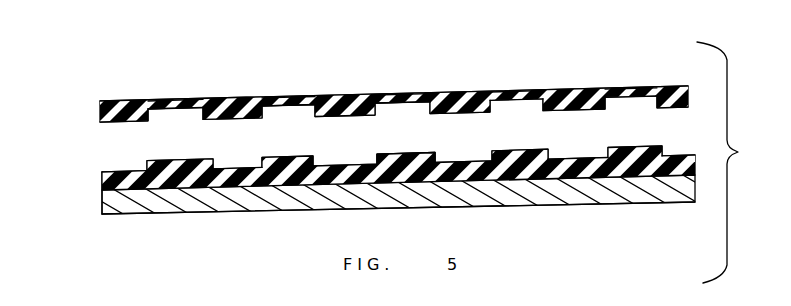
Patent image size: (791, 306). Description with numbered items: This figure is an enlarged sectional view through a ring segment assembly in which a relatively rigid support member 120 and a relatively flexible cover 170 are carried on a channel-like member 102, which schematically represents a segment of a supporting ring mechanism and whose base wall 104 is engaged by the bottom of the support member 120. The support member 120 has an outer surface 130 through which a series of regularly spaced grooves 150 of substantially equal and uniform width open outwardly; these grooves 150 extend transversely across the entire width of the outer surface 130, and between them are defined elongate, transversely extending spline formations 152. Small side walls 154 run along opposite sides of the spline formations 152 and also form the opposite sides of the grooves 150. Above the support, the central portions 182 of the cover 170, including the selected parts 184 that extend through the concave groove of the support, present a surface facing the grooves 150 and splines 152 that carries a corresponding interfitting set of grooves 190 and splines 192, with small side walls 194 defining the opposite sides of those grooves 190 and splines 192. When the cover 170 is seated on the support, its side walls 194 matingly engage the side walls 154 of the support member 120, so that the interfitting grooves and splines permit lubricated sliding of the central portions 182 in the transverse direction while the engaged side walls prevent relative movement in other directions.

The channel-like member 102 is at (170, 214).
The base wall 104 is at (492, 200).
The support member 120 is at (96, 183).
The outer surface 130 is at (415, 147).
The grooves 150 is at (115, 170).
The spline formations 152 is at (162, 160).
The side walls 154 is at (131, 213).
The cover 170 is at (579, 82).
The central portions 182 is at (136, 93).
The selected parts 184 is at (372, 96).
The grooves 190 is at (160, 118).
The splines 192 is at (115, 120).
The side walls 194 is at (160, 104).